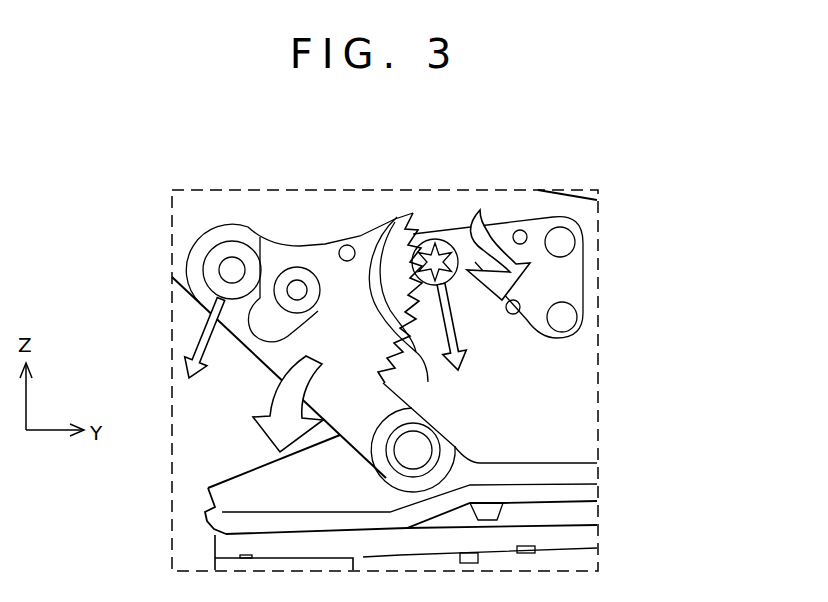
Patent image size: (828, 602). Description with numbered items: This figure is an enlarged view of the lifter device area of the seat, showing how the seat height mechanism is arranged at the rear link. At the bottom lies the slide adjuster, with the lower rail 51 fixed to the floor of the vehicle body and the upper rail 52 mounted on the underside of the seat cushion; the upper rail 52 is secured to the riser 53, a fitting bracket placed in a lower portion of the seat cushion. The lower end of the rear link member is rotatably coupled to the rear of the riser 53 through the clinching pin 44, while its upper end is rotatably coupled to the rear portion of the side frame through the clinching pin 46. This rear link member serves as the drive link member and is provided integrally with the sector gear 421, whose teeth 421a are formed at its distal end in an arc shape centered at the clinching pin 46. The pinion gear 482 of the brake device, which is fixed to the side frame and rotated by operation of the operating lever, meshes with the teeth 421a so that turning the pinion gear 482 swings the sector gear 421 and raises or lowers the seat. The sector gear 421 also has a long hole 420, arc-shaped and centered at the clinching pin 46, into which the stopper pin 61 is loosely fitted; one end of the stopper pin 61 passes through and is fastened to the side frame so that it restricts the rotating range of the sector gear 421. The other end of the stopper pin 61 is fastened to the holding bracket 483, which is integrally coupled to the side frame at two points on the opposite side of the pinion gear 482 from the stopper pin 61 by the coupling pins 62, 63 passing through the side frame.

The clinching pin 44 is at (415, 450).
The clinching pin 46 is at (232, 270).
The lower rail 51 is at (592, 558).
The upper rail 52 is at (213, 557).
The riser 53 is at (588, 487).
The stopper pin 61 is at (297, 290).
The coupling pin 62 is at (560, 242).
The coupling pin 63 is at (562, 317).
The long hole 420 is at (268, 338).
The sector gear 421 is at (372, 262).
The teeth 421a is at (426, 362).
The pinion gear 482 is at (440, 243).
The holding bracket 483 is at (538, 233).